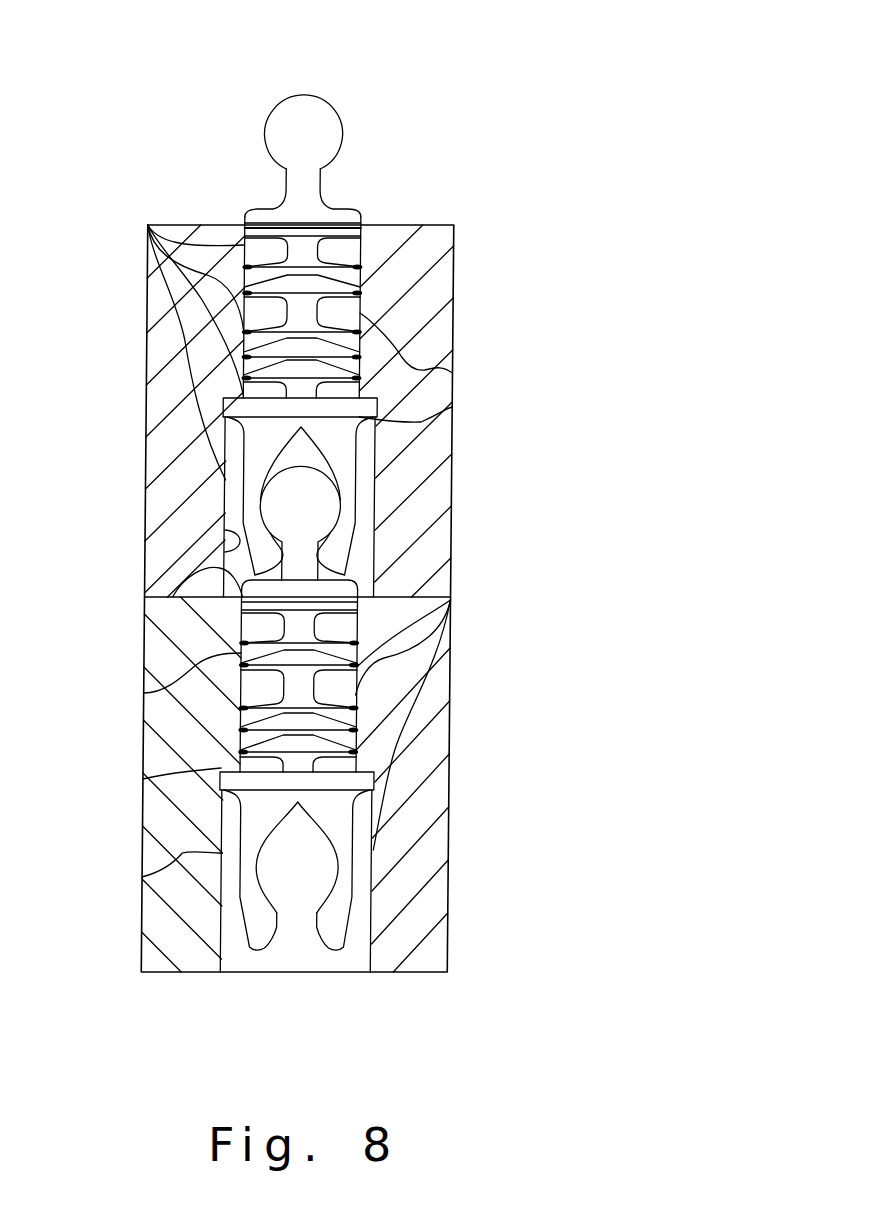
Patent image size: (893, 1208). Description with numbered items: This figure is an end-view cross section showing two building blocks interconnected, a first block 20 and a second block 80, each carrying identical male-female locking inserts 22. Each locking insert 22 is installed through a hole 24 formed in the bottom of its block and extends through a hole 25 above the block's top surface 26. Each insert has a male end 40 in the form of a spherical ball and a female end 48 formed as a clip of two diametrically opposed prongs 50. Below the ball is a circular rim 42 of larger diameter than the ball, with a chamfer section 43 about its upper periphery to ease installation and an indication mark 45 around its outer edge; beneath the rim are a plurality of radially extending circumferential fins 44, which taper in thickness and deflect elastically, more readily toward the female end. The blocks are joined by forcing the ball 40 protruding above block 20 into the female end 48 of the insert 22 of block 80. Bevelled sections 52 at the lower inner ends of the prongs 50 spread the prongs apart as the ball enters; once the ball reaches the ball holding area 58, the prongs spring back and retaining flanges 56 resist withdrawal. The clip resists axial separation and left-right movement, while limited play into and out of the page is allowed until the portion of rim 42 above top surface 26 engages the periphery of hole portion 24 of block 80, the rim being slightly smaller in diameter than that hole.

The building block 20 is at (455, 980).
The male-female locking insert 22 is at (332, 87).
The hole 24 is at (225, 557).
The hole 25 is at (358, 256).
The top surface 26 is at (427, 597).
The male end 40 is at (360, 377).
The circular rim 42 is at (375, 588).
The chamfer section 43 is at (148, 612).
The radially extending circumferential fins 44 is at (362, 303).
The indication mark 45 is at (375, 597).
The female end 48 is at (244, 962).
The prongs 50 is at (378, 482).
The bevelled section 52 is at (357, 708).
The retaining flange 56 is at (343, 480).
The ball holding area 58 is at (243, 478).
The second block 80 is at (459, 220).